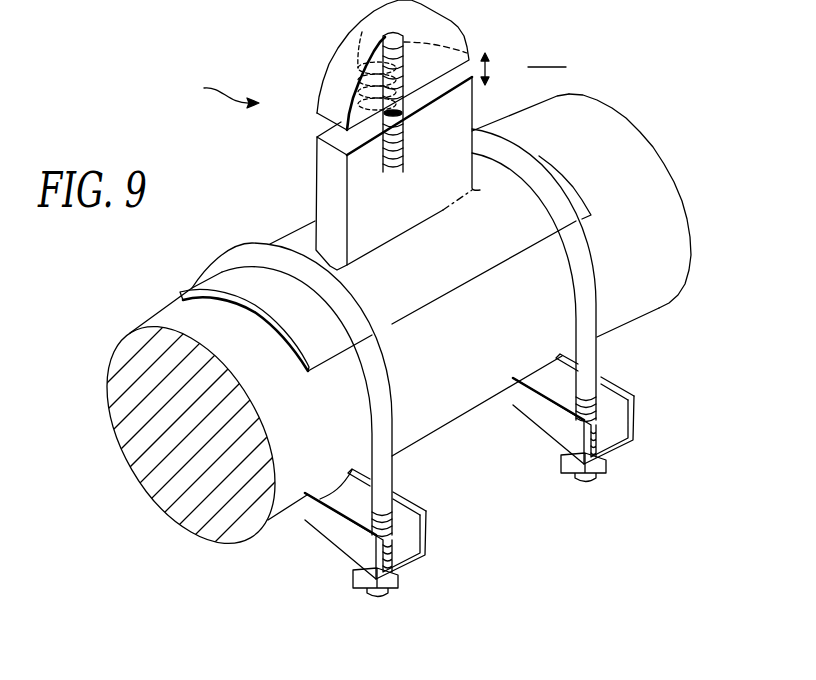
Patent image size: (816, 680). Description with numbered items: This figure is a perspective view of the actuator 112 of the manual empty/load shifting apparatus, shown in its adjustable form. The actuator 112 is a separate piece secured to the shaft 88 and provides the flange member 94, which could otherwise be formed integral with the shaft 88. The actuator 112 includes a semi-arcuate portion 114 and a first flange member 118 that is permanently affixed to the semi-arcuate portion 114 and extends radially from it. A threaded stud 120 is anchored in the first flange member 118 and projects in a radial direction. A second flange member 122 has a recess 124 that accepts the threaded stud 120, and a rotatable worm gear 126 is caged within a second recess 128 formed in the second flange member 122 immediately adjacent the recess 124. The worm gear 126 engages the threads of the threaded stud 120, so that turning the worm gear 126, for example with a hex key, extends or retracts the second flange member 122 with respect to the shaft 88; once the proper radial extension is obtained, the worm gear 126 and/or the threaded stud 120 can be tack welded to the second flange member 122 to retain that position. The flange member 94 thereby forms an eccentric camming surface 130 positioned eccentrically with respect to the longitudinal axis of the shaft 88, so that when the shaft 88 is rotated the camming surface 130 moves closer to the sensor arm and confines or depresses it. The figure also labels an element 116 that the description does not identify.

The shaft 88 is at (620, 133).
The flange member 94 is at (217, 90).
The actuator 112 is at (547, 54).
The semi-arcuate portion 114 is at (430, 285).
The U-bolt clamp bracket 116 is at (428, 533).
The first flange member 118 is at (316, 188).
The threaded stud 120 is at (400, 112).
The second flange member 122 is at (337, 58).
The recess 124 is at (466, 33).
The worm gear 126 is at (368, 41).
The second recess 128 is at (342, 114).
The eccentric camming surface 130 is at (333, 83).